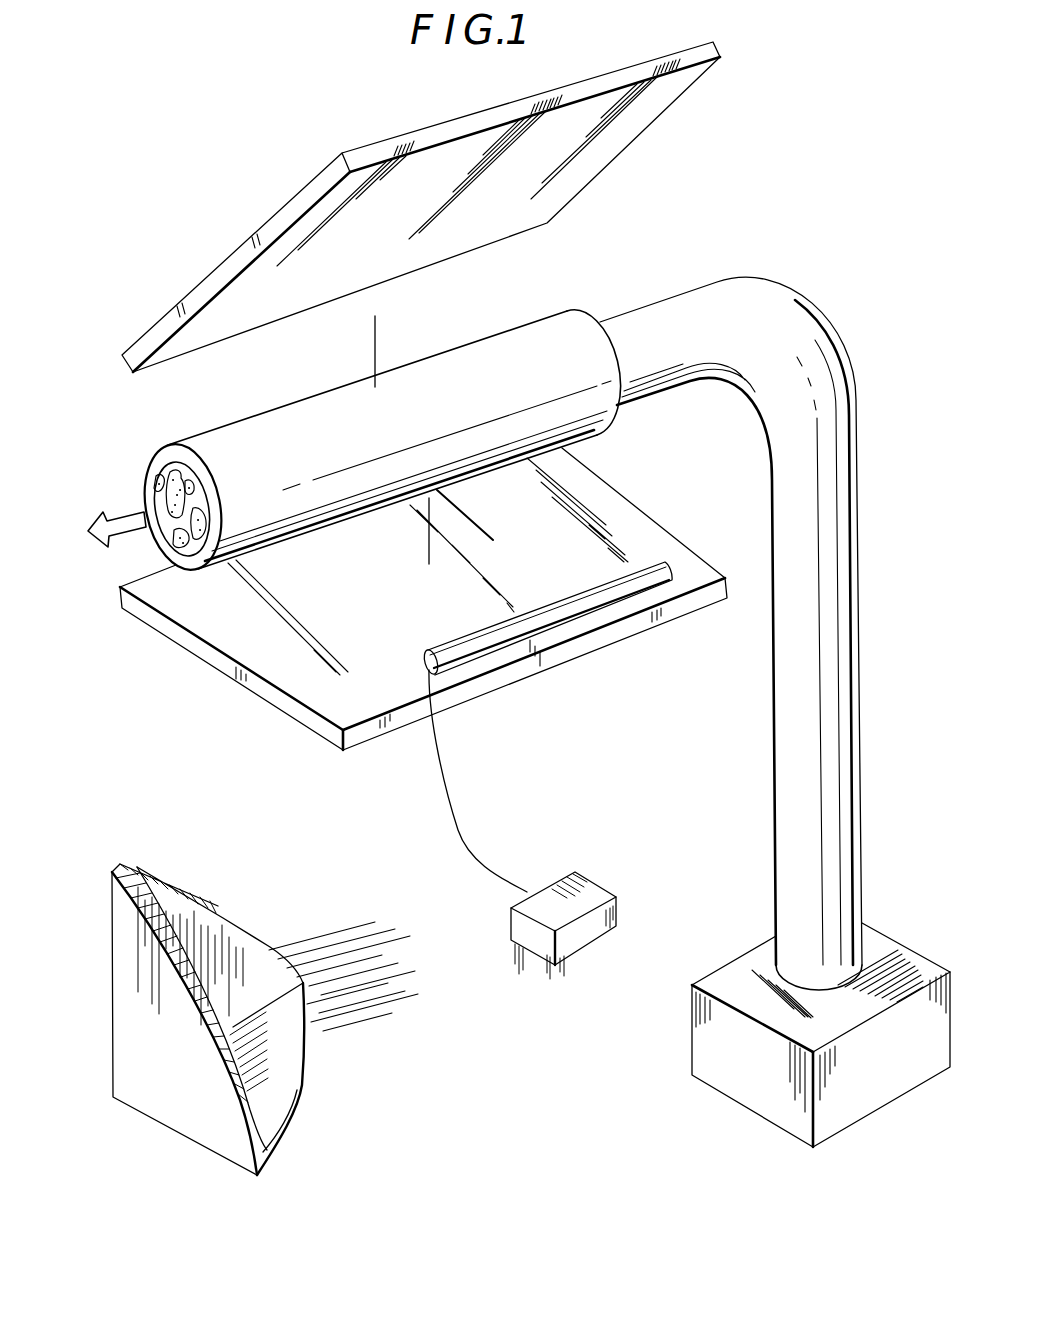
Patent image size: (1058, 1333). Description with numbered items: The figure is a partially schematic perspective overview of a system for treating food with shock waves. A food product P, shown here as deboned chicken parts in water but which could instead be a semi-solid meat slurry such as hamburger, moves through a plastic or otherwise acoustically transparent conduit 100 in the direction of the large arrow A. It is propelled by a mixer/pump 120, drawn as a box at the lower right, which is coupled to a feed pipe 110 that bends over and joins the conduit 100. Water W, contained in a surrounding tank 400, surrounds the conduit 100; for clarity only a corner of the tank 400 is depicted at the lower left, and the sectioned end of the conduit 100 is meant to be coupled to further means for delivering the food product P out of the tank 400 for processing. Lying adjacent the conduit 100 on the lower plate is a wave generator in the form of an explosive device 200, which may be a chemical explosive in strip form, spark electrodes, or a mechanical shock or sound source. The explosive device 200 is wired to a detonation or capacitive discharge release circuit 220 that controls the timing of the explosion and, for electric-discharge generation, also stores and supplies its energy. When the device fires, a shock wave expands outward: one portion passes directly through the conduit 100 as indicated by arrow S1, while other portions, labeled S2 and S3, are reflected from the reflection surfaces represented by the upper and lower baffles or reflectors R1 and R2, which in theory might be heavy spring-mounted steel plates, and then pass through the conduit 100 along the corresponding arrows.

The reflector R1 is at (345, 151).
The reflector R2 is at (243, 641).
The conduit 100 is at (571, 309).
The feed pipe 110 is at (793, 297).
The mixer/pump 120 is at (852, 1110).
The explosive device 200 is at (586, 604).
The detonation circuit 220 is at (582, 940).
The tank 400 is at (295, 1123).
The food product P is at (167, 510).
The arrow A is at (113, 533).
The water W is at (367, 1018).
The arrow S1 is at (313, 393).
The arrow S2 is at (425, 370).
The arrow S3 is at (378, 510).